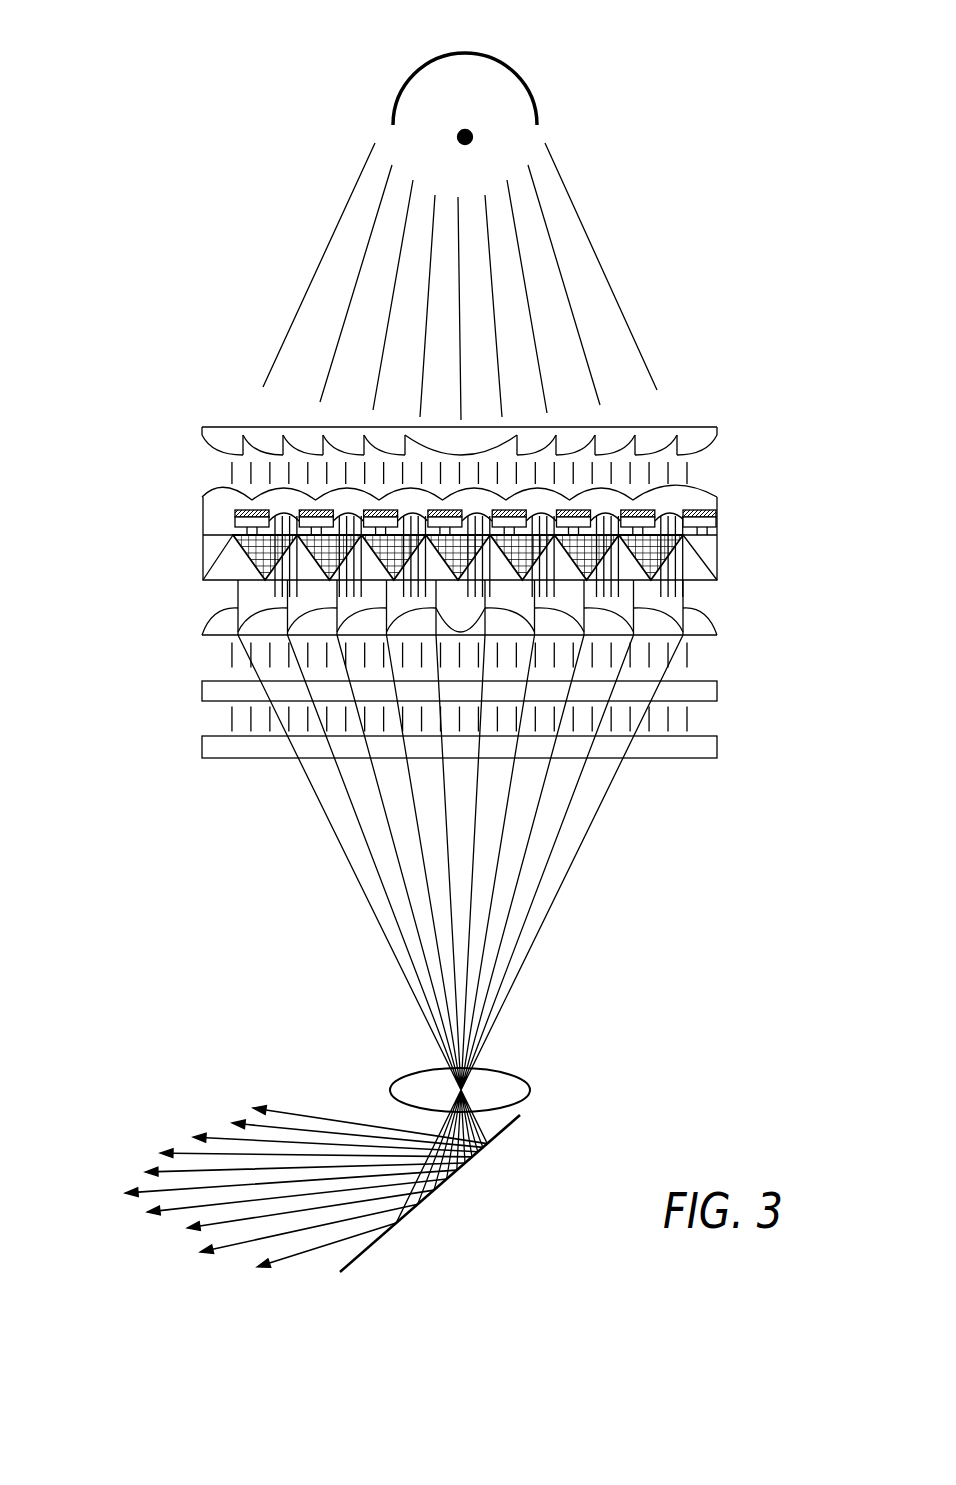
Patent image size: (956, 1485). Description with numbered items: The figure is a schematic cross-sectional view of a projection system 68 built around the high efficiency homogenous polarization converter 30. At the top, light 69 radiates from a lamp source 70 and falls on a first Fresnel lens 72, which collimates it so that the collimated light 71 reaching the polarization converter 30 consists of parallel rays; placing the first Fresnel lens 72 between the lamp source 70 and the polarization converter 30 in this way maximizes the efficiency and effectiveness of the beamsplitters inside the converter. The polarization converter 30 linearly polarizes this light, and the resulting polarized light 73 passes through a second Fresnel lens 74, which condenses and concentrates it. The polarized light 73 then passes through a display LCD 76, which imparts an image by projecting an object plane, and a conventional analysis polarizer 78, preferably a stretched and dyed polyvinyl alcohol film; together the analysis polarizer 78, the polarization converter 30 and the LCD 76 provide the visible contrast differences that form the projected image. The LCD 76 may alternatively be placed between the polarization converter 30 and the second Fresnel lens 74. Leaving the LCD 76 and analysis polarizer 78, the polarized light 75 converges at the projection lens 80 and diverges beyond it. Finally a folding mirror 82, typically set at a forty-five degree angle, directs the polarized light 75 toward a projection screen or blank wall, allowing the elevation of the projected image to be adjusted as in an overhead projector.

The projection system 68 is at (225, 198).
The light 69 is at (587, 221).
The lamp source 70 is at (470, 76).
The first Fresnel lens 72 is at (693, 438).
The collimated light 71 is at (687, 478).
The polarization converter 30 is at (721, 532).
The polarized light 73 is at (677, 607).
The second Fresnel lens 74 is at (698, 627).
The display LCD 76 is at (710, 690).
The analysis polarizer 78 is at (710, 745).
The polarized light 75 is at (533, 948).
The projection lens 80 is at (523, 1073).
The folding mirror 82 is at (403, 1218).